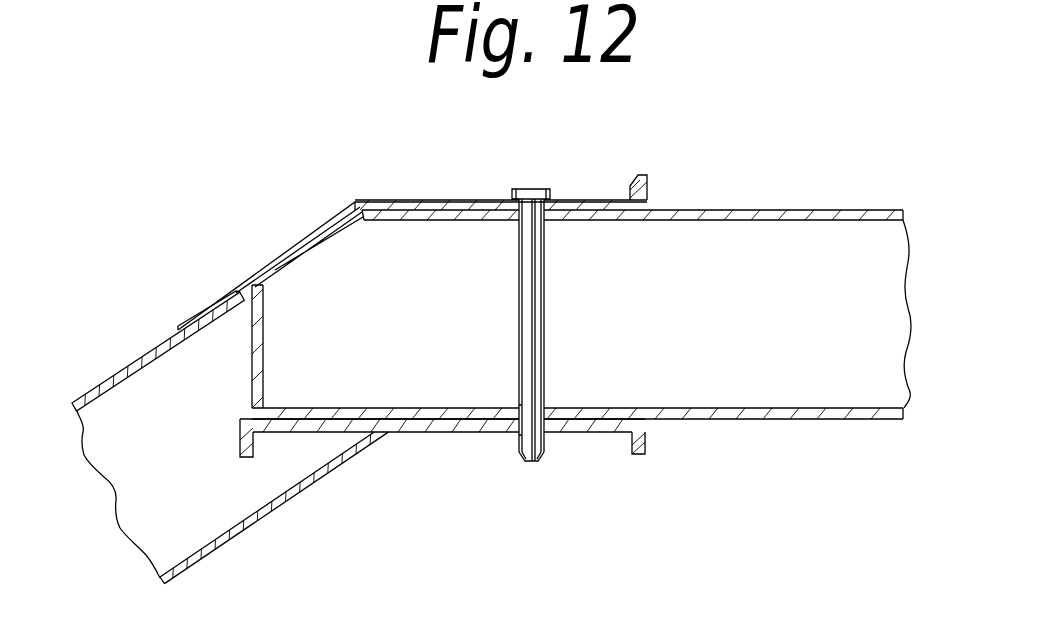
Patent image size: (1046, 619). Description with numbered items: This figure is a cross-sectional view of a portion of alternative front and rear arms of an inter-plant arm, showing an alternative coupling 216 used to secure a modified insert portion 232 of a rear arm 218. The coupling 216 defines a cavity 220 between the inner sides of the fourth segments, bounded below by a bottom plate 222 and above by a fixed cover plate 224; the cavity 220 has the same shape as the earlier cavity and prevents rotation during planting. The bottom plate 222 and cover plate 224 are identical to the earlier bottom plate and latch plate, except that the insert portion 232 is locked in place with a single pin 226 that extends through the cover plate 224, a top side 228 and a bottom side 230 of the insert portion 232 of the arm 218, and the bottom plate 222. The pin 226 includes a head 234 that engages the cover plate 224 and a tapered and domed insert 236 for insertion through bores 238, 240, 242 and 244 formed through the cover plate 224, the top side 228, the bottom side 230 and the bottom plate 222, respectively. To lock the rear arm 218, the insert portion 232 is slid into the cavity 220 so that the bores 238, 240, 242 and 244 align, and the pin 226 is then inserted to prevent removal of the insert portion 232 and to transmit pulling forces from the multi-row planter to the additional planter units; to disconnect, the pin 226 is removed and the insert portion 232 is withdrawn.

The coupling 216 is at (358, 160).
The rear arm 218 is at (842, 431).
The cavity 220 is at (377, 349).
The bottom plate 222 is at (432, 433).
The cover plate 224 is at (456, 198).
The pin 226 is at (548, 330).
The top side 228 is at (617, 221).
The bottom side 230 is at (596, 408).
The insert portion 232 is at (406, 221).
The head 234 is at (541, 189).
The tapered and domed insert 236 is at (546, 454).
The bore 238 is at (514, 191).
The bore 240 is at (544, 256).
The bore 242 is at (524, 405).
The bore 244 is at (523, 447).